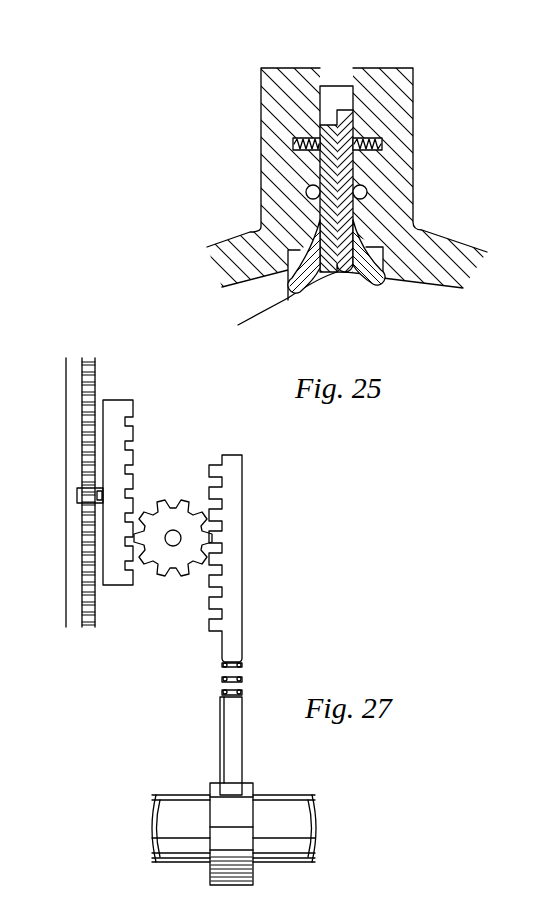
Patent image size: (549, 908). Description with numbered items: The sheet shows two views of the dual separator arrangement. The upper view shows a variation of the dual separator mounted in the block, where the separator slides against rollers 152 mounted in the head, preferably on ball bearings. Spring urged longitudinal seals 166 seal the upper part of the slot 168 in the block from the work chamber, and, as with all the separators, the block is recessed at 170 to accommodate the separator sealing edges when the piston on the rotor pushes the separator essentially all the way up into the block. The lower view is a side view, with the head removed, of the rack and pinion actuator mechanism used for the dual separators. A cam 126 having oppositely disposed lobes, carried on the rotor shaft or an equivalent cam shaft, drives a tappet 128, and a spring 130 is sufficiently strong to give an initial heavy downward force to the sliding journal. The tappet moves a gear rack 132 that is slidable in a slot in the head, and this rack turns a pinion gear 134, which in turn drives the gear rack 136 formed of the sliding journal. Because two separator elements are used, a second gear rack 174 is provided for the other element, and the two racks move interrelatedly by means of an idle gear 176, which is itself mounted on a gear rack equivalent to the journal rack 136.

In FIG. 25, the rollers 152 is at (309, 186).
In FIG. 25, the spring urged longitudinal seals 166 is at (319, 137).
In FIG. 25, the slot 168 is at (353, 90).
In FIG. 25, the recess 170 is at (302, 243).
In FIG. 27, the gear rack 174 is at (97, 375).
In FIG. 27, the idle gear 176 is at (87, 483).
In FIG. 27, the gear rack 136 is at (133, 418).
In FIG. 27, the pinion gear 134 is at (190, 498).
In FIG. 27, the gear rack 132 is at (233, 513).
In FIG. 27, the spring 130 is at (222, 680).
In FIG. 27, the tappet 128 is at (220, 726).
In FIG. 27, the cam 126 is at (210, 876).